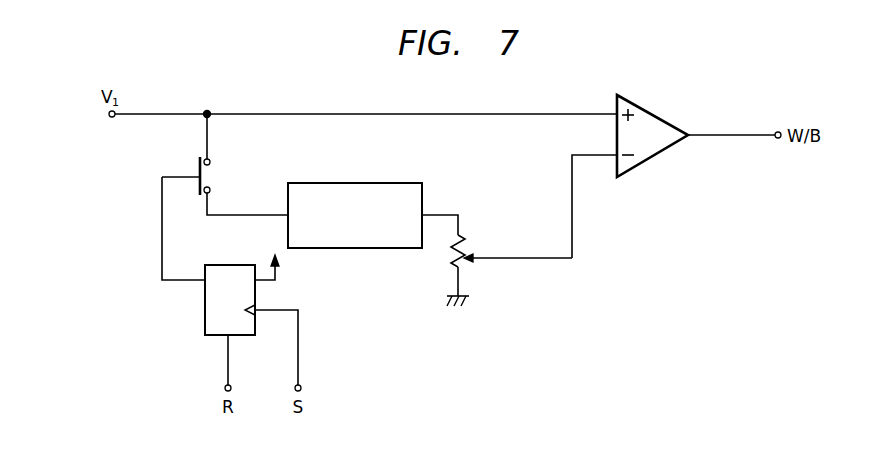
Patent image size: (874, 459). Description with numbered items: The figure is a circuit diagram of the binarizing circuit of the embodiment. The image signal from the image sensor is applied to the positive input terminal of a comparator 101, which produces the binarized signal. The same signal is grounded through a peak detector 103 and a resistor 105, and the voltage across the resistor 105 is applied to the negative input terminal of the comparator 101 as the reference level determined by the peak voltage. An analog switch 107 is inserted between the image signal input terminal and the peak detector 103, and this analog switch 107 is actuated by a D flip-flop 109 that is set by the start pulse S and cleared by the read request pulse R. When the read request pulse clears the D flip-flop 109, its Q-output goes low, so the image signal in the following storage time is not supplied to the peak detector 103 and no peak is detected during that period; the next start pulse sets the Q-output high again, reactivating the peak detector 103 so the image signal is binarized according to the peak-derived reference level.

The comparator 101 is at (657, 116).
The peak detector 103 is at (387, 183).
The resistor 105 is at (465, 246).
The analog switch 107 is at (211, 172).
The D flip-flop 109 is at (218, 265).